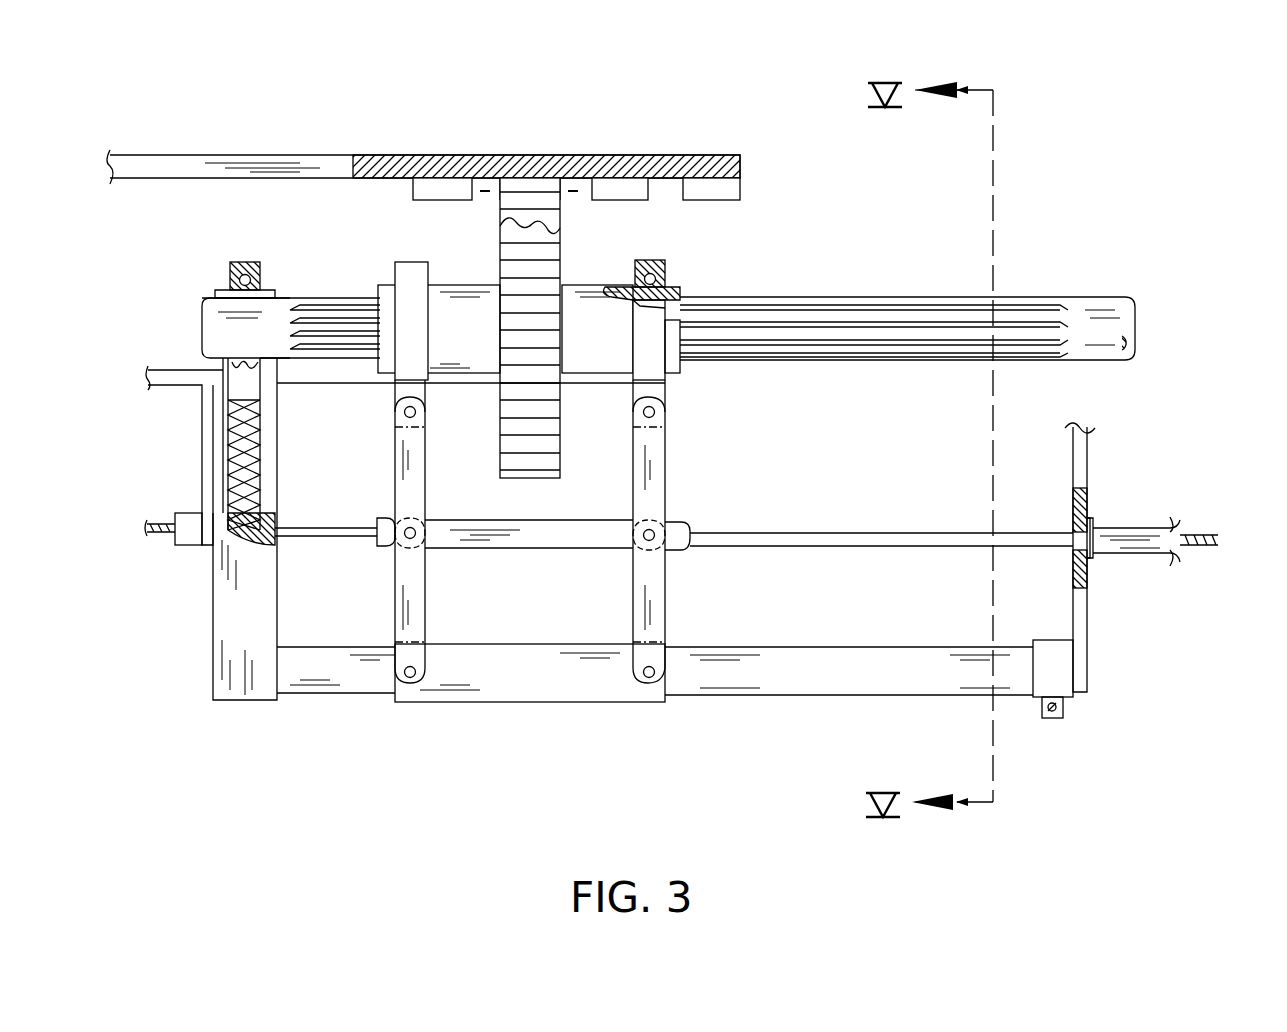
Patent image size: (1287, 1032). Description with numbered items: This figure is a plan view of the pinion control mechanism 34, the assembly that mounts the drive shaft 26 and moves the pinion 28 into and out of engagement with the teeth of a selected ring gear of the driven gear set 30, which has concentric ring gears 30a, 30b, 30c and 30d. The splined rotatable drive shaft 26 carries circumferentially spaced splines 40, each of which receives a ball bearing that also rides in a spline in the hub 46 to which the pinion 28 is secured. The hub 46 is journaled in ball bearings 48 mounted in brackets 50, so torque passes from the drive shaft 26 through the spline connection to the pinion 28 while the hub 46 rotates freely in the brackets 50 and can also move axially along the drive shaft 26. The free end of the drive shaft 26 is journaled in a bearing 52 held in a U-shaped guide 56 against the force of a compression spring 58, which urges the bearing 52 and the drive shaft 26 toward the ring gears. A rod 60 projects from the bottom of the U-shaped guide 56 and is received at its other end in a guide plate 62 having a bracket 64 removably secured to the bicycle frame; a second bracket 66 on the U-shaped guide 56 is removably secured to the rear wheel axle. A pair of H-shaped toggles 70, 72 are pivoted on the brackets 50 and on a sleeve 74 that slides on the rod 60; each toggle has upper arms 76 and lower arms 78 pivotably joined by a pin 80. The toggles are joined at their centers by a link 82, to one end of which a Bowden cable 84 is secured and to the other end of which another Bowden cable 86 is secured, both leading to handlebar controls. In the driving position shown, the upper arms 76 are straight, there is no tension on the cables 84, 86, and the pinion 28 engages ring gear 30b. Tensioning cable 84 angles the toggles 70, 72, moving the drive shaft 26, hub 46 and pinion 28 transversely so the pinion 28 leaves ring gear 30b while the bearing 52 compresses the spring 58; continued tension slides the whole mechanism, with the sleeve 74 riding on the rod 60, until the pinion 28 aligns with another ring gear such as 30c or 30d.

The drive shaft 26 is at (215, 318).
The pinion 28 is at (555, 243).
The driven gear set 30 is at (183, 152).
The ring gear 30a is at (437, 190).
The ring gear 30b is at (530, 186).
The ring gear 30c is at (620, 190).
The ring gear 30d is at (705, 190).
The pinion control mechanism 34 is at (517, 712).
The splines 40 is at (330, 300).
The hub 46 is at (471, 334).
The ball bearings 48 is at (665, 278).
The brackets 50 is at (410, 280).
The bearing 52 is at (245, 262).
The U-shaped guide 56 is at (245, 529).
The compression spring 58 is at (260, 425).
The rod 60 is at (335, 680).
The guide plate 62 is at (1080, 598).
The bracket 64 is at (1055, 685).
The second bracket 66 is at (165, 368).
The H-shaped toggle 70 is at (690, 610).
The H-shaped toggle 72 is at (440, 610).
The sleeve 74 is at (530, 673).
The upper arms 76 is at (412, 475).
The lower arms 78 is at (410, 598).
The pin 80 is at (413, 533).
The link 82 is at (557, 535).
The Bowden cable 84 is at (855, 533).
The Bowden cable 86 is at (160, 520).